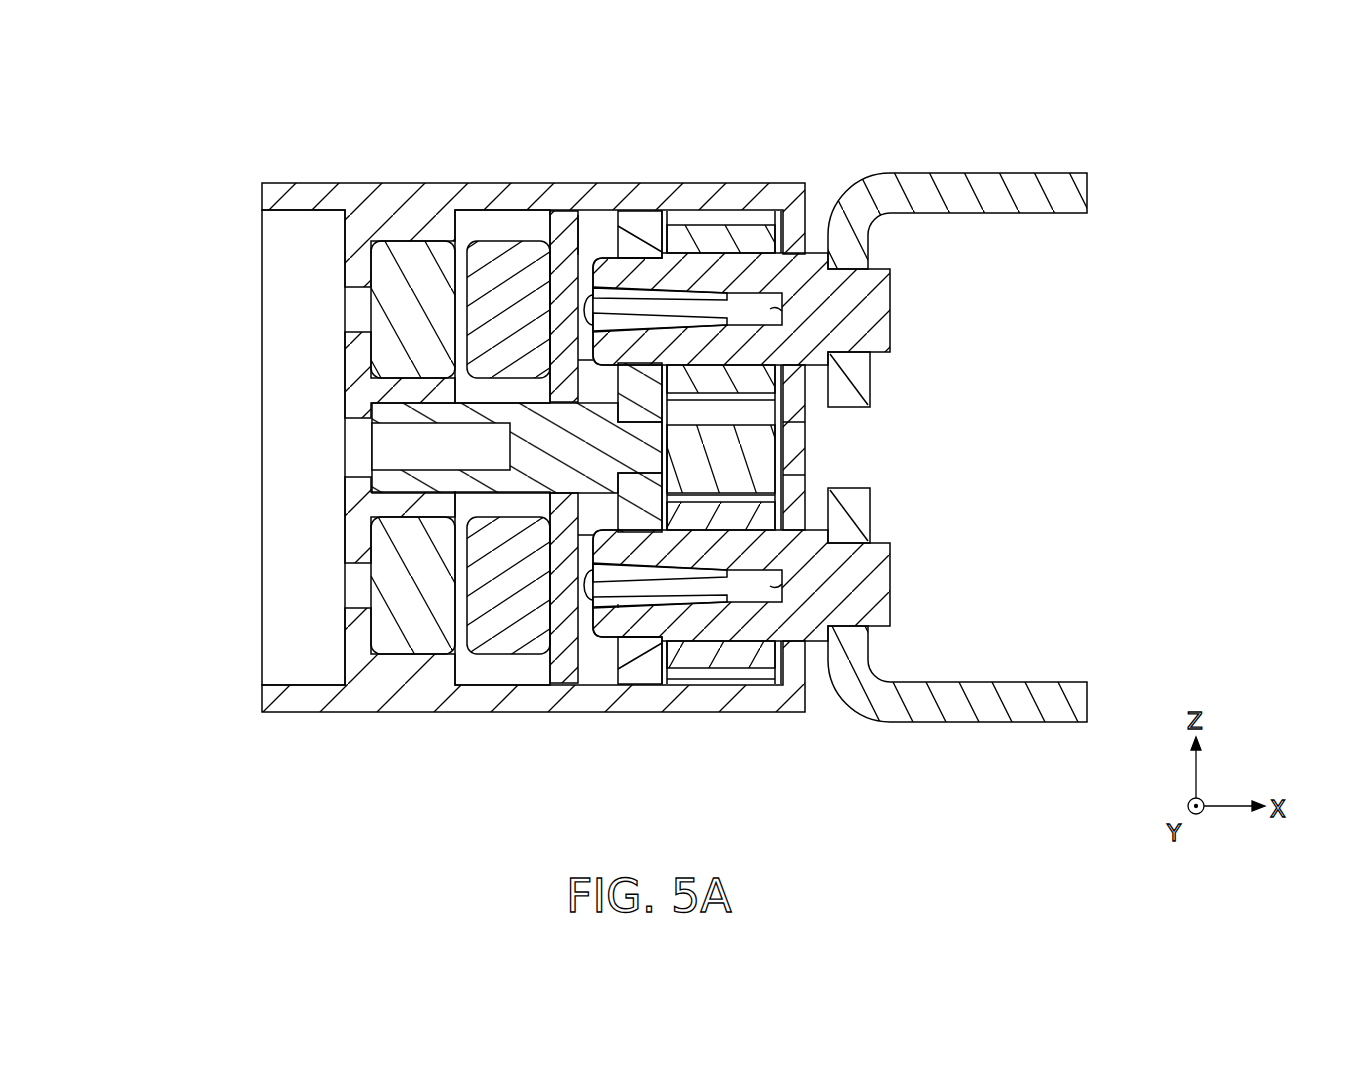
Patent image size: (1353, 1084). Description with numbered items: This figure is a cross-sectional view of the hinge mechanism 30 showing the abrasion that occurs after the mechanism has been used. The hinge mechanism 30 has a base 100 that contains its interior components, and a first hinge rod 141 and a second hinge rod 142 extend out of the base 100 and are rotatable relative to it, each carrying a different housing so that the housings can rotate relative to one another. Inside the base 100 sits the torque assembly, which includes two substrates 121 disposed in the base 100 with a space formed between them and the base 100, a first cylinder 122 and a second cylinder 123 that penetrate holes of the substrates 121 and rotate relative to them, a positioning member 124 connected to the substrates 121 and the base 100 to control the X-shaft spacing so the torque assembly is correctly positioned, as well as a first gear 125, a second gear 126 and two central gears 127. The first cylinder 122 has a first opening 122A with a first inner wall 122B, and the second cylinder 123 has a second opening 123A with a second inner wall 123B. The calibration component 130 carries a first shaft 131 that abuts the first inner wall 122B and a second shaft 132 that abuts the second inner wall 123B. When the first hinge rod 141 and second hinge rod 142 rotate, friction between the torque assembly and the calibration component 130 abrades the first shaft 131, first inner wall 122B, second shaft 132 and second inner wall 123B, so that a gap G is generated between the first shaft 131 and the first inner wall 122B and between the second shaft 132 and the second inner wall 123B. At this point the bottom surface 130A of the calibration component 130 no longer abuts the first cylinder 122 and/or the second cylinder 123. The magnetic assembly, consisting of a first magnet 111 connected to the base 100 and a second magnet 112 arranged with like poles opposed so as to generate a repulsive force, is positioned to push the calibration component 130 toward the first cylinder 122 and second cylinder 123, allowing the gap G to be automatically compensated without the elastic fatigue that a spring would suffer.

The hinge mechanism 30 is at (139, 110).
The base 100 is at (266, 184).
The first magnet 111 is at (413, 262).
The second magnet 112 is at (495, 262).
The substrates 121 is at (641, 240).
The first cylinder 122 is at (778, 226).
The first opening 122A is at (770, 312).
The first inner wall 122B is at (610, 262).
The second cylinder 123 is at (778, 673).
The second opening 123A is at (770, 583).
The second inner wall 123B is at (608, 632).
The positioning member 124 is at (427, 477).
The first gear 125 is at (740, 245).
The second gear 126 is at (733, 655).
The central gears 127 is at (760, 445).
The calibration component 130 is at (560, 248).
The bottom surface 130A is at (576, 246).
The first shaft 131 is at (683, 300).
The second shaft 132 is at (685, 600).
The first hinge rod 141 is at (1065, 174).
The second hinge rod 142 is at (1065, 680).
The gap G is at (638, 606).